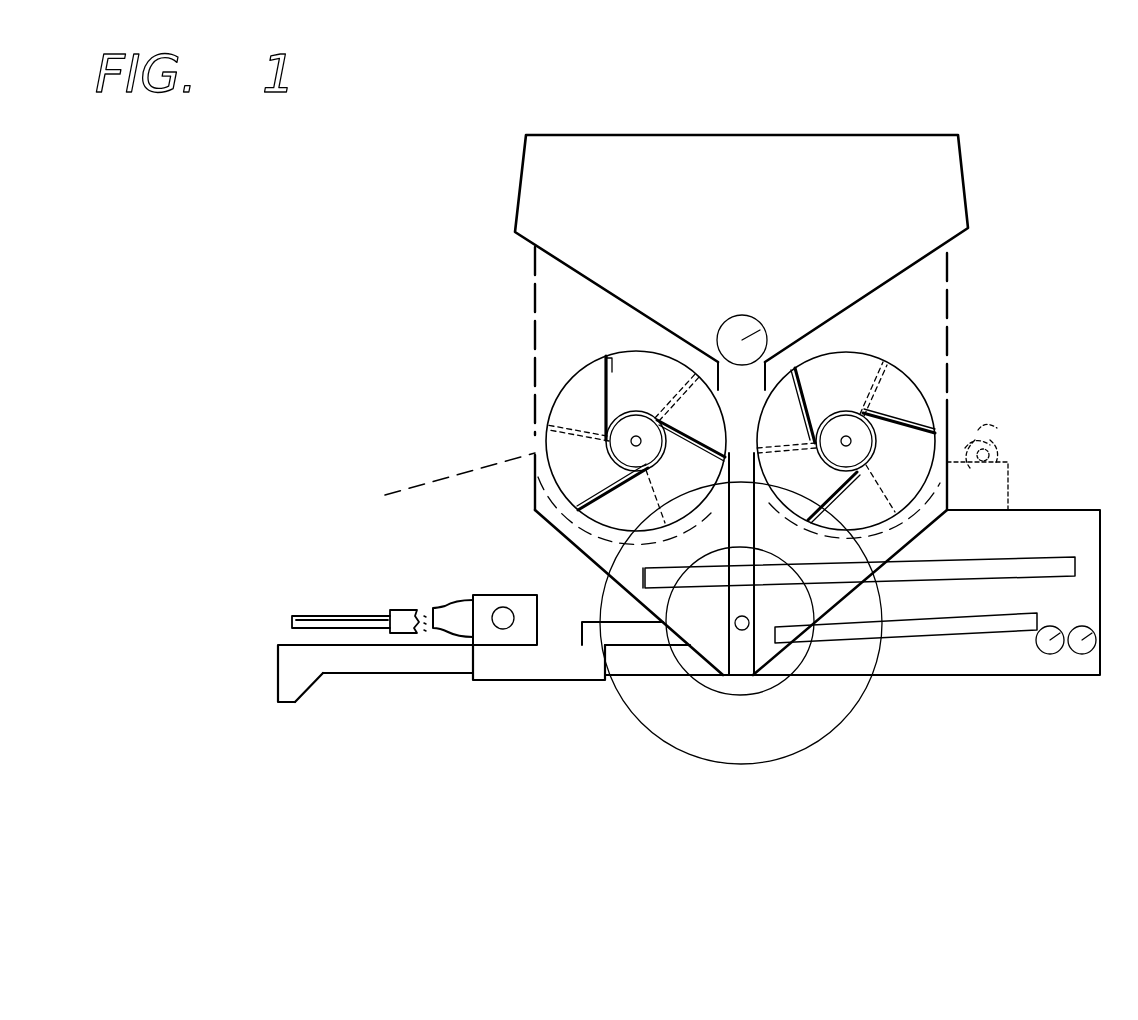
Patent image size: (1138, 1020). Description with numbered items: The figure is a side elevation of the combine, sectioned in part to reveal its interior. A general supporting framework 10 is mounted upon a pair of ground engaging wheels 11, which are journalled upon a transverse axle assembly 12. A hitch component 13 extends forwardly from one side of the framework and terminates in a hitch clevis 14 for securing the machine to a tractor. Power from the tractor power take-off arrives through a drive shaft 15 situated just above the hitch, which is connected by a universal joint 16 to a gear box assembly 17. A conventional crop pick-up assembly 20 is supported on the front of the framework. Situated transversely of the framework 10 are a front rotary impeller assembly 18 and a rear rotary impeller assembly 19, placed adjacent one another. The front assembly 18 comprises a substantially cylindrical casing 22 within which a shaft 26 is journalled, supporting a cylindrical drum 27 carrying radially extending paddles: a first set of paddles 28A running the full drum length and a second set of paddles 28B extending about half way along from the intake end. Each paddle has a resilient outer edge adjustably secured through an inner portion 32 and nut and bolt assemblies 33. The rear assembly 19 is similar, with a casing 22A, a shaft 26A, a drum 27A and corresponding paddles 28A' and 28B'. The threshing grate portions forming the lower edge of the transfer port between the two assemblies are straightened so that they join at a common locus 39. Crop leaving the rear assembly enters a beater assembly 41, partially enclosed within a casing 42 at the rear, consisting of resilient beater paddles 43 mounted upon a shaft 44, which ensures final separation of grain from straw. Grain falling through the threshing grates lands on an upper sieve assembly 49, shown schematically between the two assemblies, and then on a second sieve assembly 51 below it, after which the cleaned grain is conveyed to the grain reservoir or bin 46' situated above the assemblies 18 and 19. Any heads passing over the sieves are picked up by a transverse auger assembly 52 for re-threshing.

The supporting framework 10 is at (622, 619).
The ground engaging wheels 11 is at (815, 730).
The transverse axle assembly 12 is at (750, 623).
The hitch component 13 is at (407, 668).
The hitch clevis 14 is at (305, 683).
The drive shaft 15 is at (340, 611).
The universal joint 16 is at (408, 610).
The gear box assembly 17 is at (490, 597).
The front rotary impeller assembly 18 is at (560, 408).
The rear rotary impeller assembly 19 is at (932, 397).
The crop pick-up assembly 20 is at (452, 482).
The cylindrical casing 22 is at (608, 355).
The cylindrical casing 22A is at (845, 354).
The shaft 26 is at (641, 444).
The shaft 26A is at (850, 442).
The cylindrical drum 27 is at (650, 468).
The cylindrical drum 27A is at (857, 466).
The first set of paddles 28A is at (691, 427).
The second set of paddles 28B is at (623, 447).
The first set of paddles 28A' is at (824, 405).
The second set of paddles 28B' is at (826, 437).
The inner portion 32 is at (604, 388).
The nut and bolt assemblies 33 is at (614, 372).
The common locus 39 is at (738, 512).
The beater assembly 41 is at (1000, 433).
The casing 42 is at (1008, 500).
The beater blades or paddles 43 is at (1012, 428).
The shaft 44 is at (990, 458).
The grain reservoir or bin 46' is at (766, 322).
The upper sieve assembly 49 is at (962, 568).
The second sieve assembly 51 is at (983, 620).
The transverse auger assembly 52 is at (1085, 654).